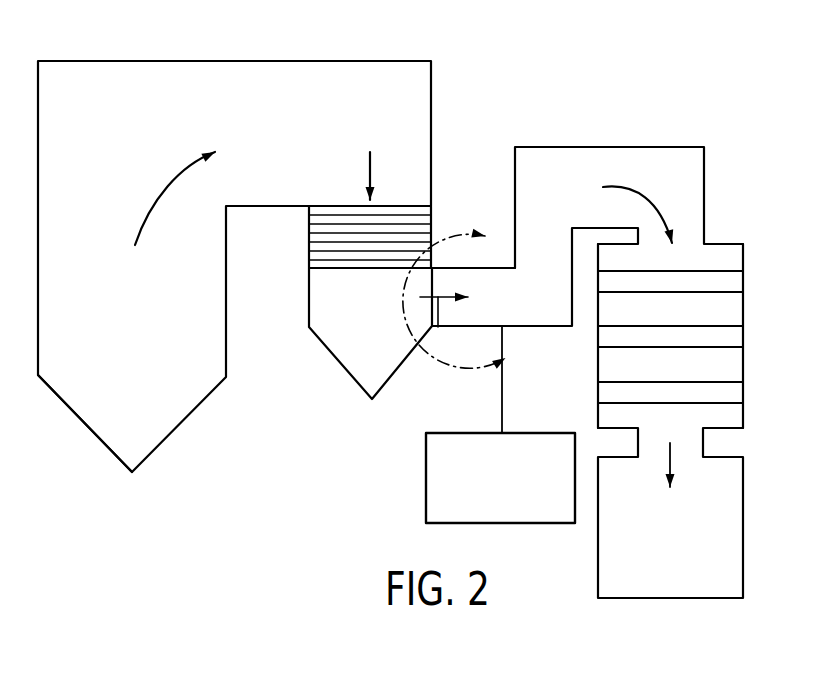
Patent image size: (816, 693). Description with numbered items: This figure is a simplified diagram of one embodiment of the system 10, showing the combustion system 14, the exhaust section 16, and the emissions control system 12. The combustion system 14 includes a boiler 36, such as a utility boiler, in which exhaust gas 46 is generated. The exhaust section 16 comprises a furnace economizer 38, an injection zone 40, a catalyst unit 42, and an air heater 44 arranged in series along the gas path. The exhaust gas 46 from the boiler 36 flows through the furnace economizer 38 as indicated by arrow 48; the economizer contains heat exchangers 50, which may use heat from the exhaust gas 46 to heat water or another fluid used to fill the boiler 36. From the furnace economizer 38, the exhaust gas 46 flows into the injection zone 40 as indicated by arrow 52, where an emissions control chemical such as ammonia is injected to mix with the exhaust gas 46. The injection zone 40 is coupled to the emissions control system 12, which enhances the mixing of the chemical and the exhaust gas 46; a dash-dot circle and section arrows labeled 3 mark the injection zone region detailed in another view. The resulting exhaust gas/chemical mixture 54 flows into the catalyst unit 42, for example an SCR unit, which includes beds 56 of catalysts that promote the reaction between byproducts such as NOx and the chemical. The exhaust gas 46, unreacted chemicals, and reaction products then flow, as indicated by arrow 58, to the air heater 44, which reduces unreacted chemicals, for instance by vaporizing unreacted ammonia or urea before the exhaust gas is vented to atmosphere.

The system 10 is at (501, 50).
The emissions control system 12 is at (426, 478).
The combustion system 14 is at (42, 393).
The exhaust section 16 is at (573, 130).
The boiler 36 is at (83, 427).
The furnace economizer 38 is at (309, 257).
The injection zone 40 is at (473, 268).
The catalyst unit 42 is at (745, 307).
The air heater 44 is at (745, 524).
The exhaust gas 46 is at (162, 192).
The arrow 48 is at (370, 178).
The heat exchangers 50 is at (432, 268).
The arrow 52 is at (438, 327).
The exhaust gas/chemical mixture 54 is at (648, 191).
The beds 56 is at (723, 270).
The arrow 58 is at (669, 460).
The section line for FIG. 3 is at (466, 295).